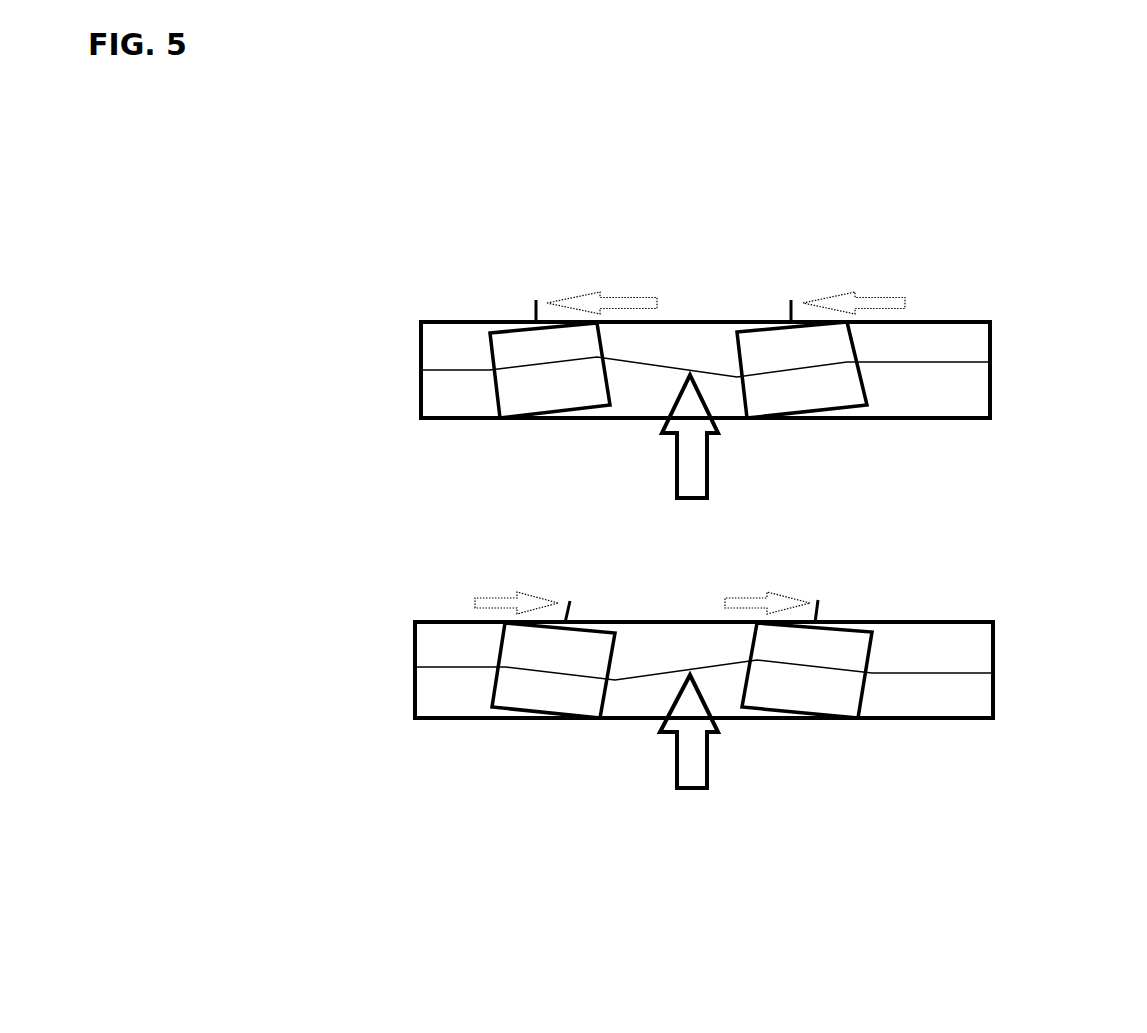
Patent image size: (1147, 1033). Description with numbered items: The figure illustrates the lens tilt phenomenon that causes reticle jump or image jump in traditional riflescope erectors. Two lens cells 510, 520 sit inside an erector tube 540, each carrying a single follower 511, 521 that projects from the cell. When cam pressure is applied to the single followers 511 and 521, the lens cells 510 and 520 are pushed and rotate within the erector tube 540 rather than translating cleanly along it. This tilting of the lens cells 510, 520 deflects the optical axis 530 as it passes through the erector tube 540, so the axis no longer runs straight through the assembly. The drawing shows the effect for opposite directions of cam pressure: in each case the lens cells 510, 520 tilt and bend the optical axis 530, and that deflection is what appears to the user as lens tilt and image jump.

The lens cell 510 is at (512, 348).
The single follower 511 is at (526, 288).
The lens cell 520 is at (762, 350).
The single follower 521 is at (782, 286).
The optical axis 530 is at (172, 373).
The erector tube 540 is at (409, 333).